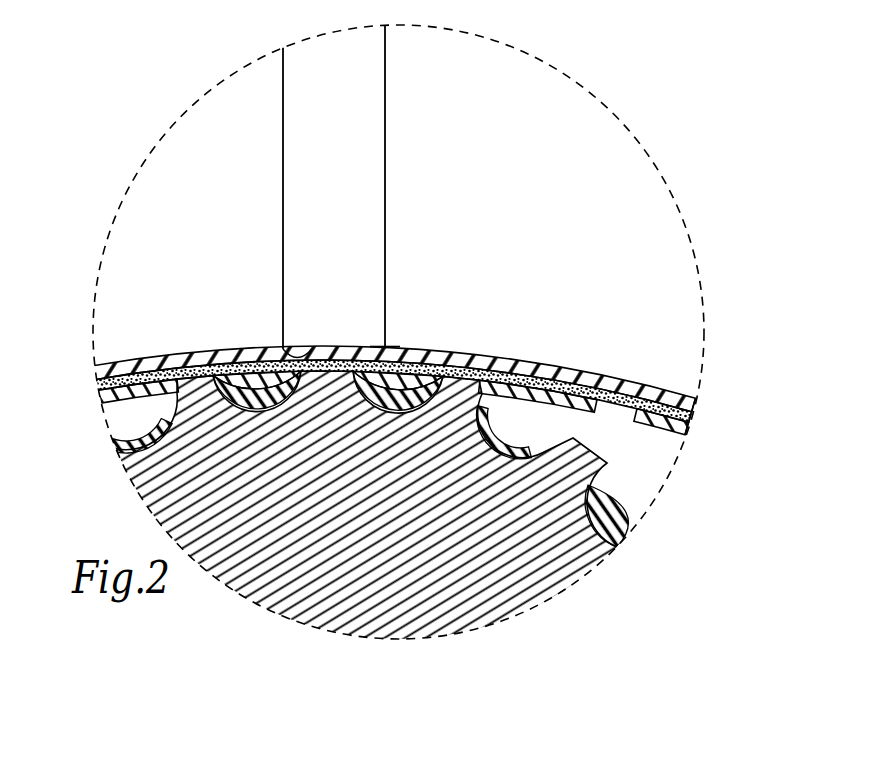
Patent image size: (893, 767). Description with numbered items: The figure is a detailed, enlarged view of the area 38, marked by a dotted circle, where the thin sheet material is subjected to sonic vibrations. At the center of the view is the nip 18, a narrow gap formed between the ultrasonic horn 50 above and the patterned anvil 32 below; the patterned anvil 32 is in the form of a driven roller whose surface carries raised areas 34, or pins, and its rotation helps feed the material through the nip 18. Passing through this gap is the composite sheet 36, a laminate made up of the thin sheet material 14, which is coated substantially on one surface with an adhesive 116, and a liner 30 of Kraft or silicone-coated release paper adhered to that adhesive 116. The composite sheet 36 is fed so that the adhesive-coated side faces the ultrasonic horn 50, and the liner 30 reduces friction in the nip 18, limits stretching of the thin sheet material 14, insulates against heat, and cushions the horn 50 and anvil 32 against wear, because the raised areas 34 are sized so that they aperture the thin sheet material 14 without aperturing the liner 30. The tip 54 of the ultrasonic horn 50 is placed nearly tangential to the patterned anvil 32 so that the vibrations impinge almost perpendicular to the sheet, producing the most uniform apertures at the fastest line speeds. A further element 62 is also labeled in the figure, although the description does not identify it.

The thin sheet material 14 is at (683, 440).
The nip 18 is at (405, 337).
The liner 30 is at (673, 392).
The patterned anvil 32 is at (463, 603).
The raised areas 34 is at (477, 382).
The composite sheet 36 is at (441, 369).
The area 38 is at (590, 95).
The ultrasonic horn 50 is at (386, 78).
The tip 54 is at (277, 356).
The lens insert in recess 62 is at (373, 384).
The adhesive 116 is at (692, 413).